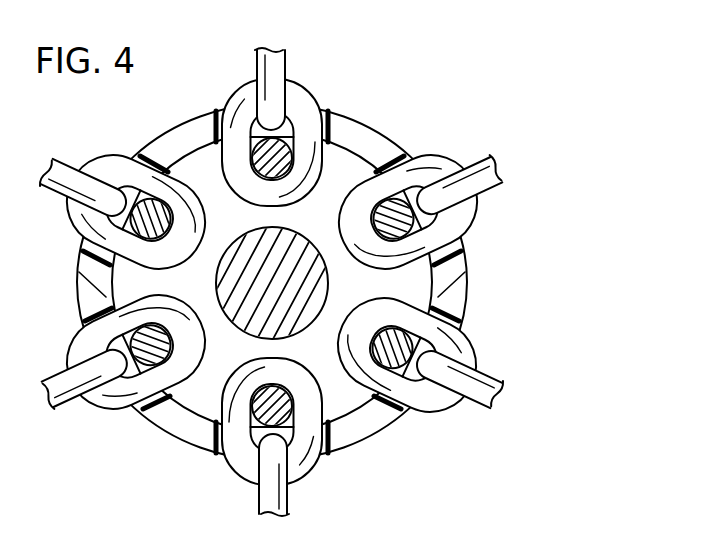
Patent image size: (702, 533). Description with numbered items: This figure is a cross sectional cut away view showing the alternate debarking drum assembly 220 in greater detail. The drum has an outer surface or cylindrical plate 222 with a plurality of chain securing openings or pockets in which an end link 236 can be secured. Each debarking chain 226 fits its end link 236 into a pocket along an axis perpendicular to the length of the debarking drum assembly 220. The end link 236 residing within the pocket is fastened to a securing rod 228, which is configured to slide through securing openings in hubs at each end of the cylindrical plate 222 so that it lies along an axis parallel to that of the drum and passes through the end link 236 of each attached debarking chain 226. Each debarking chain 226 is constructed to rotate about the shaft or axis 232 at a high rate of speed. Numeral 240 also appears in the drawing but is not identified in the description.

The debarking drum assembly 220 is at (164, 126).
The cylindrical plate 222 is at (360, 125).
The debarking chain 226 is at (487, 373).
The securing rod 228 is at (370, 203).
The shaft or axis 232 is at (288, 279).
The end link 236 is at (446, 198).
The component 240 is at (514, 528).